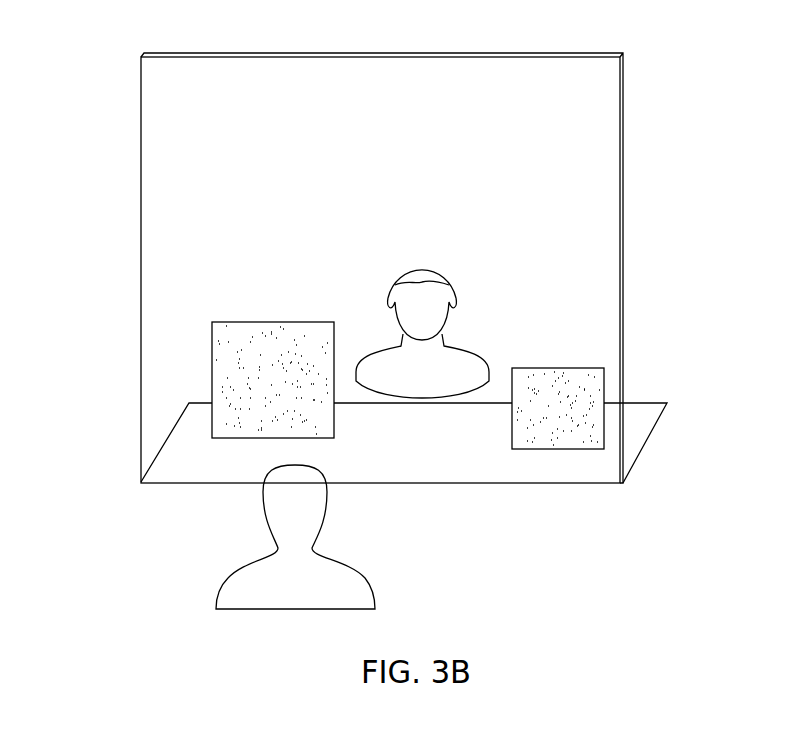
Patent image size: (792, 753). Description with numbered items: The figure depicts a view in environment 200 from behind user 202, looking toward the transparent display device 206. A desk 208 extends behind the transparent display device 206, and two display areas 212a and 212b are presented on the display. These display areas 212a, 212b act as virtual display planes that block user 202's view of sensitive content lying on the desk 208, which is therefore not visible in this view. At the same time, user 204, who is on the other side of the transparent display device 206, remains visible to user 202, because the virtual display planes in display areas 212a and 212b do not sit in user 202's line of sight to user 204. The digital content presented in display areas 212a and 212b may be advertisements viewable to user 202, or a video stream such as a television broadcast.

The environment 200 is at (652, 58).
The user 202 is at (228, 578).
The user 204 is at (476, 347).
The transparent display device 206 is at (141, 131).
The desk 208 is at (436, 450).
The display area 212a is at (212, 342).
The display area 212b is at (604, 383).